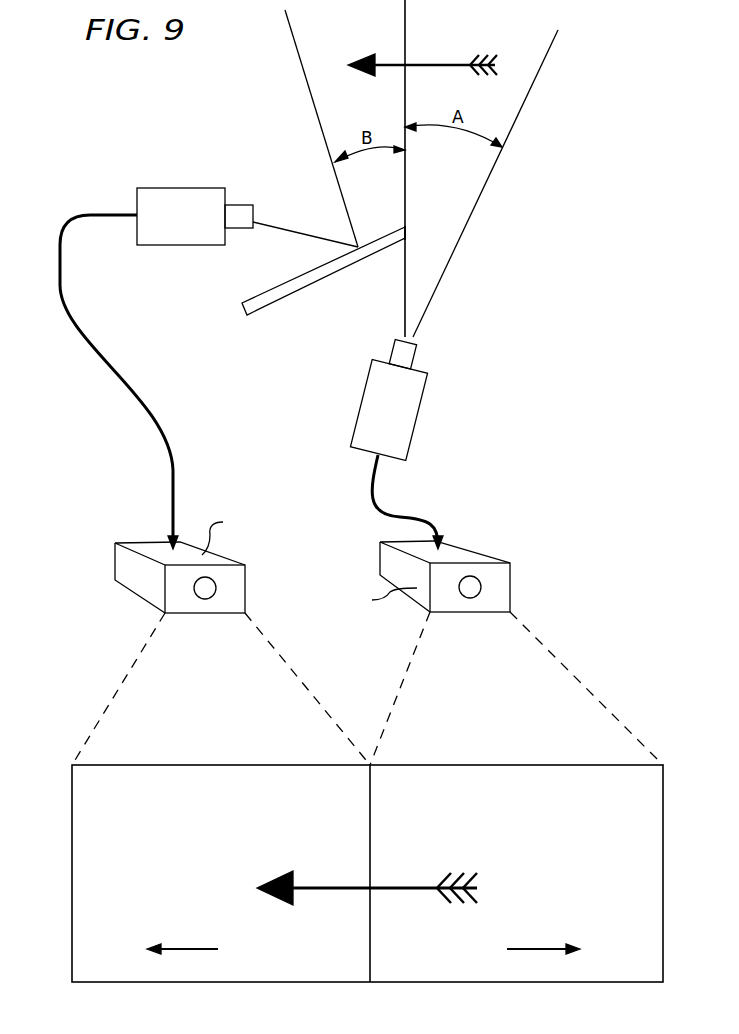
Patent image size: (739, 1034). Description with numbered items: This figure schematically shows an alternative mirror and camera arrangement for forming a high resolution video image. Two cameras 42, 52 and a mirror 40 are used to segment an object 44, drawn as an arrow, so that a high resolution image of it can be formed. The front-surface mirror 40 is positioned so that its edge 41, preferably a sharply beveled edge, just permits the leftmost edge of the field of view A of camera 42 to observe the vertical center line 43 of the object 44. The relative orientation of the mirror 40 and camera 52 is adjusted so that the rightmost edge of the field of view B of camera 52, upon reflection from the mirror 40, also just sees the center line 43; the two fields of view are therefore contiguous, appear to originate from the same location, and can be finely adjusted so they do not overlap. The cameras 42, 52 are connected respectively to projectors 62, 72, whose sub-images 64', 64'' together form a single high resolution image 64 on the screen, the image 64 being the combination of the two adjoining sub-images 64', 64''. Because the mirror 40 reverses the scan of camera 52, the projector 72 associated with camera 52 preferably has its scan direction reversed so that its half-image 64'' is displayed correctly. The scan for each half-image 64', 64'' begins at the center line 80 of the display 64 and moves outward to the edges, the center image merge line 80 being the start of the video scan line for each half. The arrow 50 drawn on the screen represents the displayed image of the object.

The mirror 40 is at (312, 287).
The edge 41 is at (405, 233).
The camera 42 is at (428, 395).
The vertical center line 43 is at (405, 17).
The object 44 is at (388, 66).
The projected arrow image 50 is at (348, 887).
The camera 52 is at (170, 188).
The projector 62 is at (508, 588).
The high resolution image 64 is at (369, 873).
The sub-image 64' is at (543, 989).
The sub-image 64'' is at (180, 989).
The projector 72 is at (123, 563).
The center line 80 is at (371, 798).